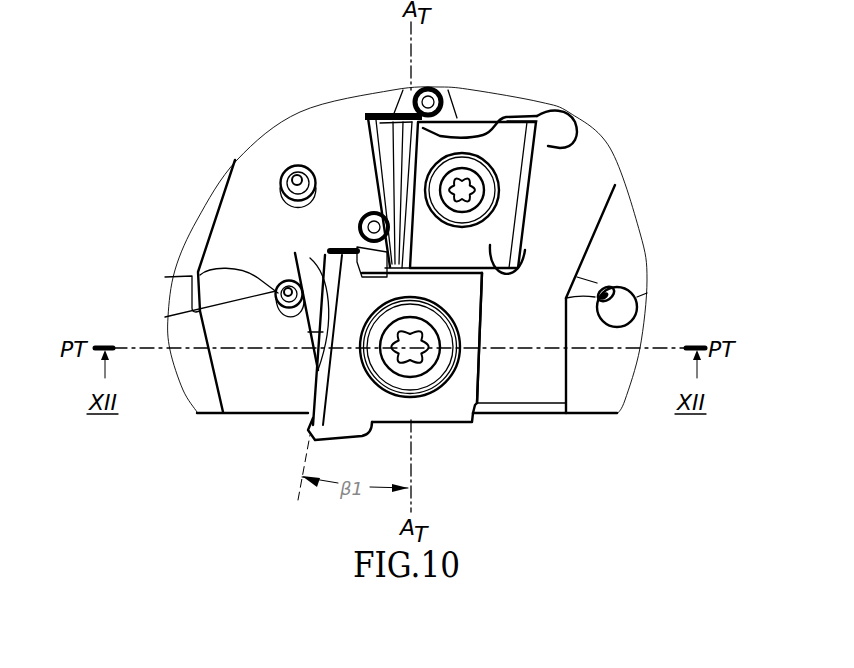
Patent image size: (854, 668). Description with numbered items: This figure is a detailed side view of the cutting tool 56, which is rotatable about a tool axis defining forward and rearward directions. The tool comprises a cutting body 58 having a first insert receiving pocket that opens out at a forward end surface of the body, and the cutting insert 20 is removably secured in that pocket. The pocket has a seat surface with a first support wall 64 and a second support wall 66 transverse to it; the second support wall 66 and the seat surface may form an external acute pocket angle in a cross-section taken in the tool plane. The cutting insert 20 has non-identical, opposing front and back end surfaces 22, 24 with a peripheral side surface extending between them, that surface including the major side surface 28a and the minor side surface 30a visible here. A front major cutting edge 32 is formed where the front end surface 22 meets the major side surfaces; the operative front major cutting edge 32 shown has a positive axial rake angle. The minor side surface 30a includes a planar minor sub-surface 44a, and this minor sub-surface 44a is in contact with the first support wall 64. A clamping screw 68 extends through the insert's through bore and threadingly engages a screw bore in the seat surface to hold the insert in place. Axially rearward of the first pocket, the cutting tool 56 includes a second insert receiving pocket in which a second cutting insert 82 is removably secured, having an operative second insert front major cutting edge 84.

The cutting insert 20 is at (511, 351).
The front end surface 22 is at (313, 271).
The back end surface 24 is at (486, 397).
The major side surface 28a is at (382, 416).
The minor side surface 30a is at (362, 249).
The front major cutting edge 32 is at (313, 393).
The minor sub-surface 44a is at (450, 272).
The cutting tool 56 is at (520, 68).
The cutting body 58 is at (298, 125).
The first support wall 64 is at (373, 277).
The second support wall 66 is at (473, 390).
The clamping screw 68 is at (477, 350).
The second cutting insert 82 is at (517, 128).
The second insert front major cutting edge 84 is at (382, 256).